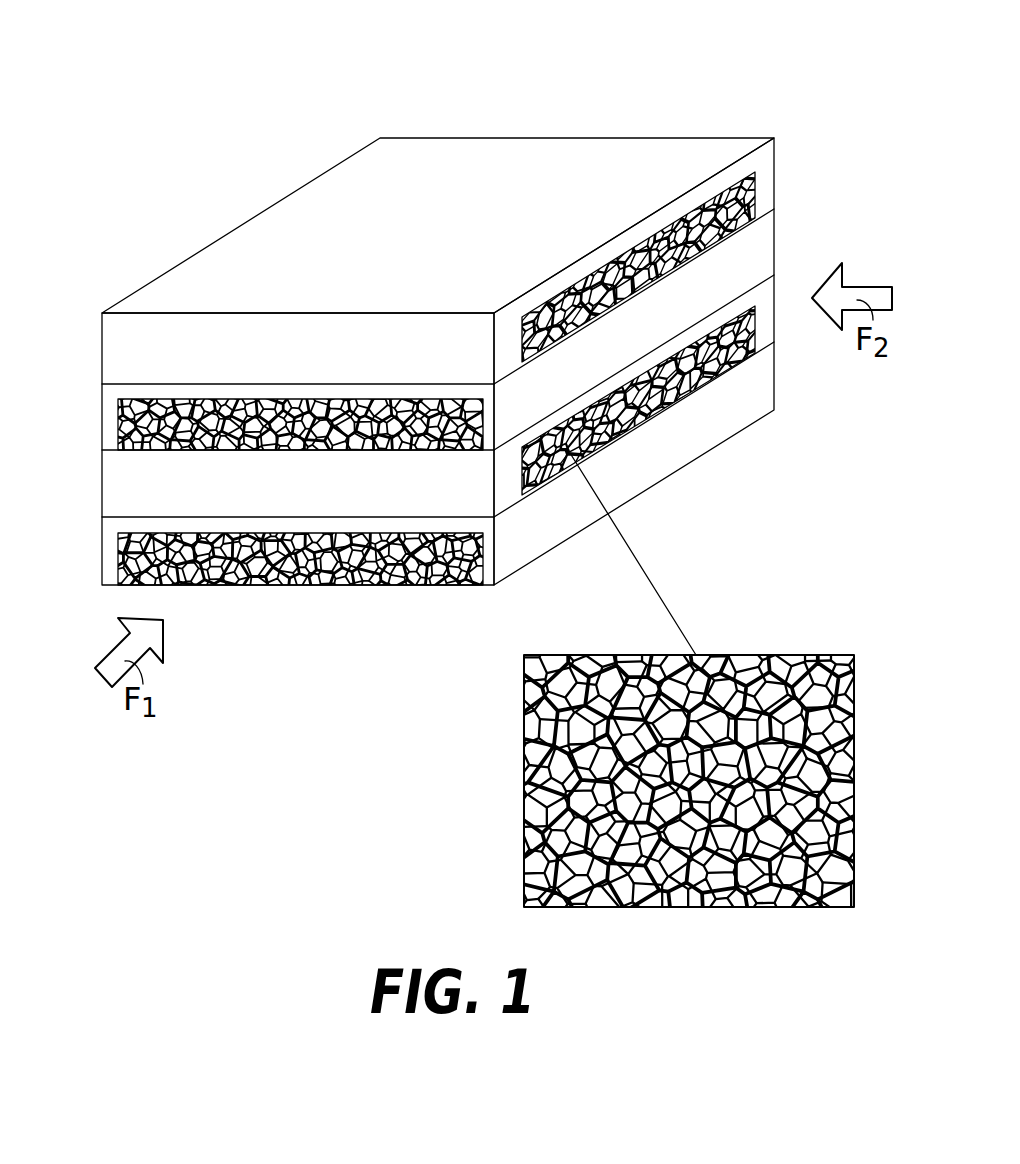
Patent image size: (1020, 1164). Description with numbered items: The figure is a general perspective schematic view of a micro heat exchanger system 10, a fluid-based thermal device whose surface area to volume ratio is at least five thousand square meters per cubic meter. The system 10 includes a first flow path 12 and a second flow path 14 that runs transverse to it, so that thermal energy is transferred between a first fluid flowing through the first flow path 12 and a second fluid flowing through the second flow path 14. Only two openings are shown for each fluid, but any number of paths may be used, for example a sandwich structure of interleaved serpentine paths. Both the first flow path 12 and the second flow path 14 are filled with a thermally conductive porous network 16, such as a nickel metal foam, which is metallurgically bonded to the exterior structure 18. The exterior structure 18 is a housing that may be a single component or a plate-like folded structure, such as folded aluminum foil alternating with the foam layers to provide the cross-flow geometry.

The micro heat exchanger system 10 is at (618, 77).
The first flow path 12 is at (118, 423).
The second flow path 14 is at (757, 203).
The thermally conductive porous network 16 is at (854, 813).
The exterior structure 18 is at (438, 170).